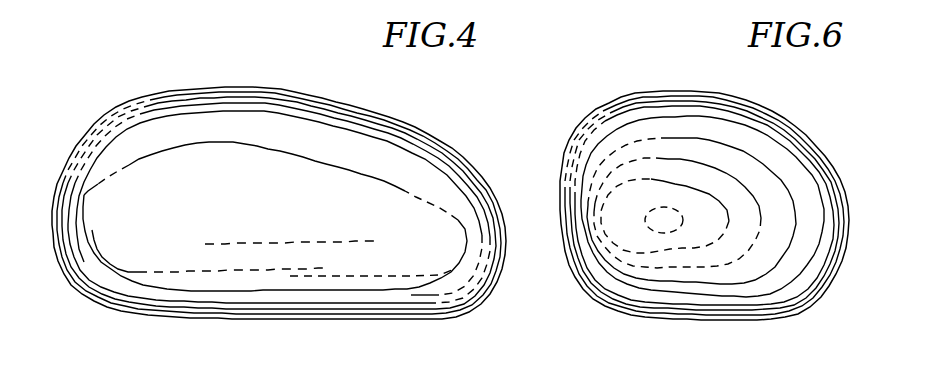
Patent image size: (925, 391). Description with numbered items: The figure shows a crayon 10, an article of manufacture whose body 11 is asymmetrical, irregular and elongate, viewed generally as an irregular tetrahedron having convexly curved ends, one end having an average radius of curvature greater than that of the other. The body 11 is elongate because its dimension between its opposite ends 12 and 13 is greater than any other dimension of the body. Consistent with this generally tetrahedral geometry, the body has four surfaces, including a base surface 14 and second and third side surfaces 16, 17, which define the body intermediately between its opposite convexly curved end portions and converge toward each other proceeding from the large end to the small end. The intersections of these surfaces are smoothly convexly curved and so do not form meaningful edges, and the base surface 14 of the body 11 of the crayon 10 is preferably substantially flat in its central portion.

In FIG. 6, the crayon 10 is at (655, 70).
In FIG. 4, the body 11 is at (196, 134).
In FIG. 6, the body 11 is at (778, 184).
In FIG. 4, the end 12 is at (50, 220).
In FIG. 6, the end 12 is at (665, 221).
In FIG. 4, the end 13 is at (507, 240).
In FIG. 4, the base surface 14 is at (276, 318).
In FIG. 6, the base surface 14 is at (742, 318).
In FIG. 4, the second surface 16 is at (284, 203).
In FIG. 6, the second surface 16 is at (560, 205).
In FIG. 6, the third surface 17 is at (850, 208).